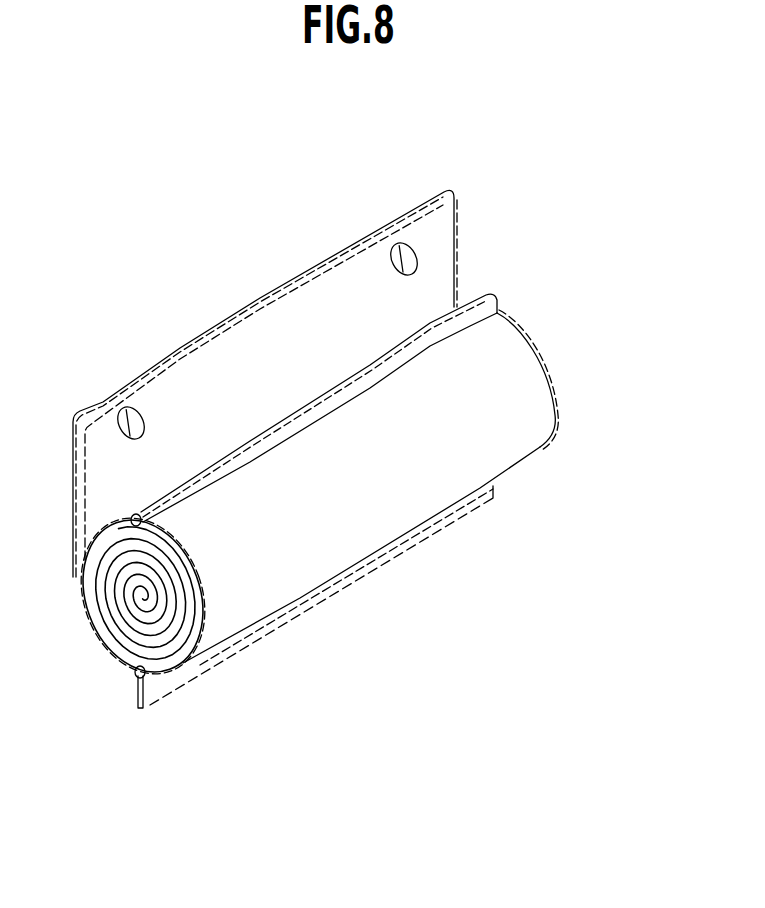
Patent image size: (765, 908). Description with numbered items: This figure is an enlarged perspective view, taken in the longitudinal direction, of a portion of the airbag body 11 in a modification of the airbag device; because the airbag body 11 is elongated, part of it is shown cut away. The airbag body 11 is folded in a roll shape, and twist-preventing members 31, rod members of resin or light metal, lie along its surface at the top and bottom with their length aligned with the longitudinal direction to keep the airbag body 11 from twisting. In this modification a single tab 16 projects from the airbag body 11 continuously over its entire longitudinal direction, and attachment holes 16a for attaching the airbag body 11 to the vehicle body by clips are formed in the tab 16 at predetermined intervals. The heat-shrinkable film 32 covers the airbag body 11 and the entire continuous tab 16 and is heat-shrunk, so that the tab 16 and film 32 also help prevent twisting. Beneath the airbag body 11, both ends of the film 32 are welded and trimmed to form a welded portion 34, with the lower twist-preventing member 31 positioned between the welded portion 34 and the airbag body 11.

The airbag body 11 is at (98, 617).
The tab 16 is at (255, 305).
The attachment holes 16a is at (132, 414).
The twist-preventing members 31 is at (497, 298).
The heat-shrinkable film 32 is at (457, 237).
The welded portion 34 is at (381, 562).